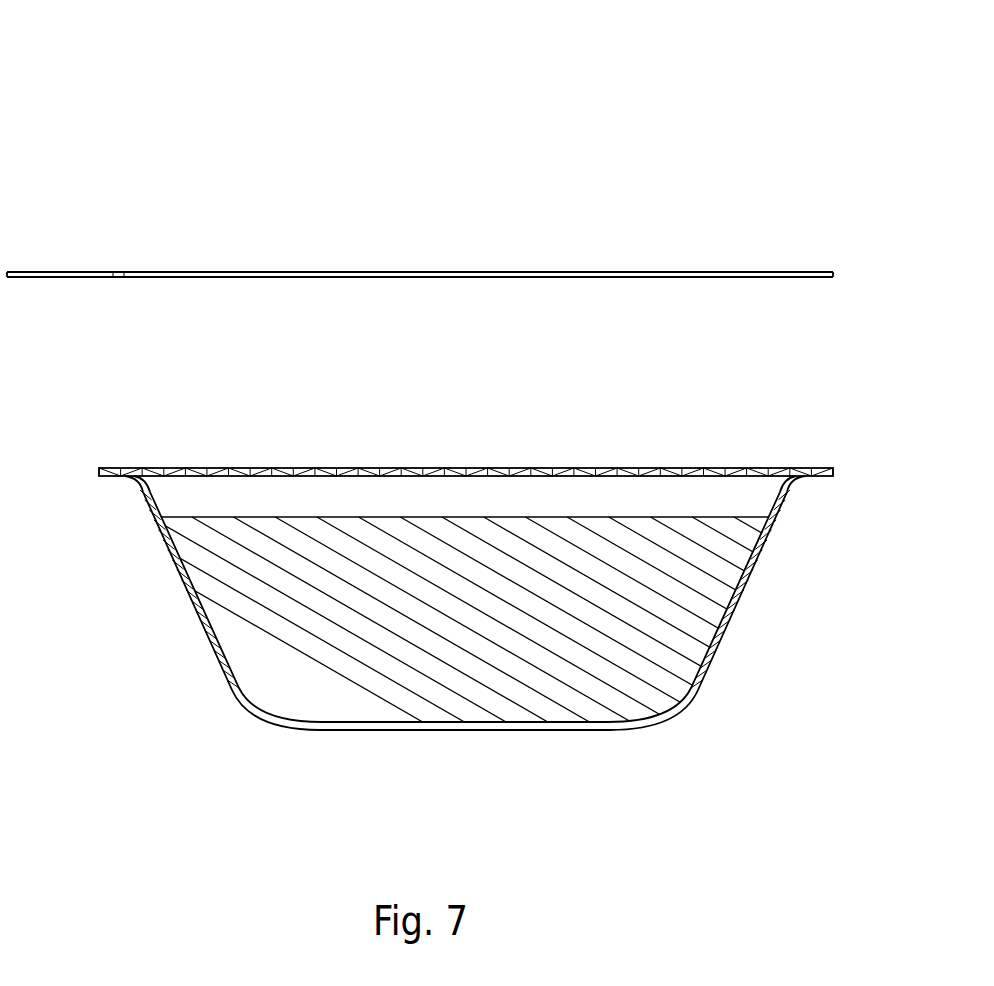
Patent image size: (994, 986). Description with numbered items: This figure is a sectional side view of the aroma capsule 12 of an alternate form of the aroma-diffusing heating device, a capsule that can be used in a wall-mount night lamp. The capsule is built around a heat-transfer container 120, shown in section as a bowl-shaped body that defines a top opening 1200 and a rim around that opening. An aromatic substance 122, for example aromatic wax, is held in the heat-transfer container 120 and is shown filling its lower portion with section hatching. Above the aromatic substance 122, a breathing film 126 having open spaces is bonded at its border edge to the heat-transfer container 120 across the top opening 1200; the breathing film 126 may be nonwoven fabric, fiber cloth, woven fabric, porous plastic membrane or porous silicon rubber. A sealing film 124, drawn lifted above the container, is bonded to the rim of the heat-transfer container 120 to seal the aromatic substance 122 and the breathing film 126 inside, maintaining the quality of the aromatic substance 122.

The aroma capsule 12 is at (352, 107).
The sealing film 124 is at (485, 273).
The top opening 1200 is at (275, 450).
The breathing film 126 is at (568, 468).
The heat-transfer container 120 is at (636, 731).
The aromatic substance 122 is at (280, 652).